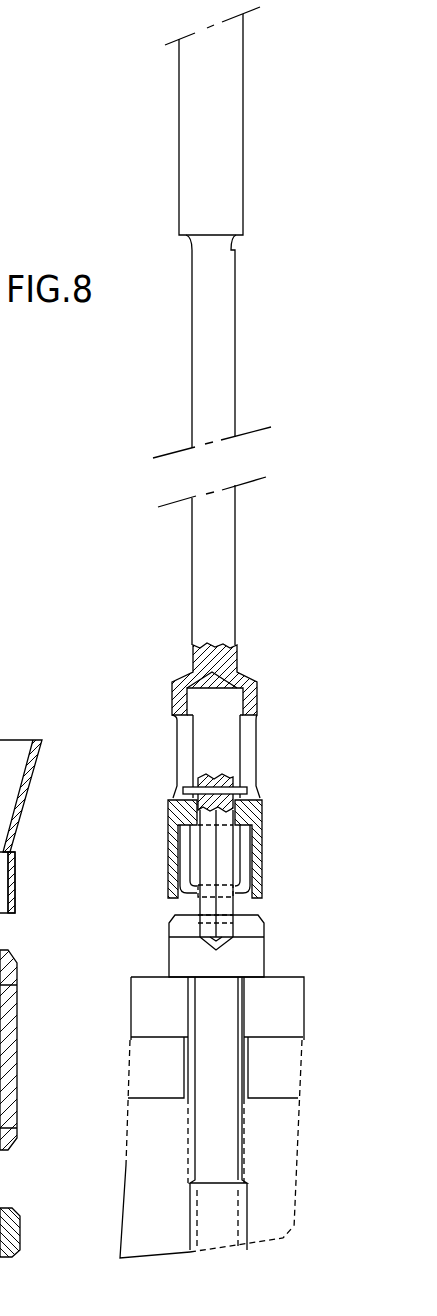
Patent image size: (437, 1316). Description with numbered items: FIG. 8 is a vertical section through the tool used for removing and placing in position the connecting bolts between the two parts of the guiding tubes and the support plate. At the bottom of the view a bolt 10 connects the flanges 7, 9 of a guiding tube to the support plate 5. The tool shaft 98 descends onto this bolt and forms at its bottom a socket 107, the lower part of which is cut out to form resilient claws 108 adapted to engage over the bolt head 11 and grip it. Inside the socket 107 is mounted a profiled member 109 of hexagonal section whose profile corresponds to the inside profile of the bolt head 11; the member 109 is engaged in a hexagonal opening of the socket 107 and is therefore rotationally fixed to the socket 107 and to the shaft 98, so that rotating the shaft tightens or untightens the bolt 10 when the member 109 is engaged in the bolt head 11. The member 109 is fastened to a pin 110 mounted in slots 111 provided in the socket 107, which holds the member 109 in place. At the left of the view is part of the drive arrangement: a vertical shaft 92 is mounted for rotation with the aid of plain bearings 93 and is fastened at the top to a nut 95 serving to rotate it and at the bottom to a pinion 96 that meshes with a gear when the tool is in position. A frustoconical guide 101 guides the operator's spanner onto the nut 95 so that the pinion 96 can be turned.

The tool shaft 98 is at (197, 172).
The socket 107 is at (253, 702).
The slots 111 is at (183, 742).
The pin 110 is at (222, 782).
The profiled member 109 is at (206, 842).
The resilient claws 108 is at (258, 862).
The bolt head 11 is at (250, 946).
The flange 9 is at (155, 1000).
The bolt 10 is at (230, 1018).
The flange 7 is at (272, 1076).
The support plate 5 is at (270, 1192).
The frustoconical guide 101 is at (28, 797).
The nut 95 is at (14, 905).
The vertical shaft 92 is at (0, 1046).
The plain bearings 93 is at (17, 985).
The pinion 96 is at (10, 1236).